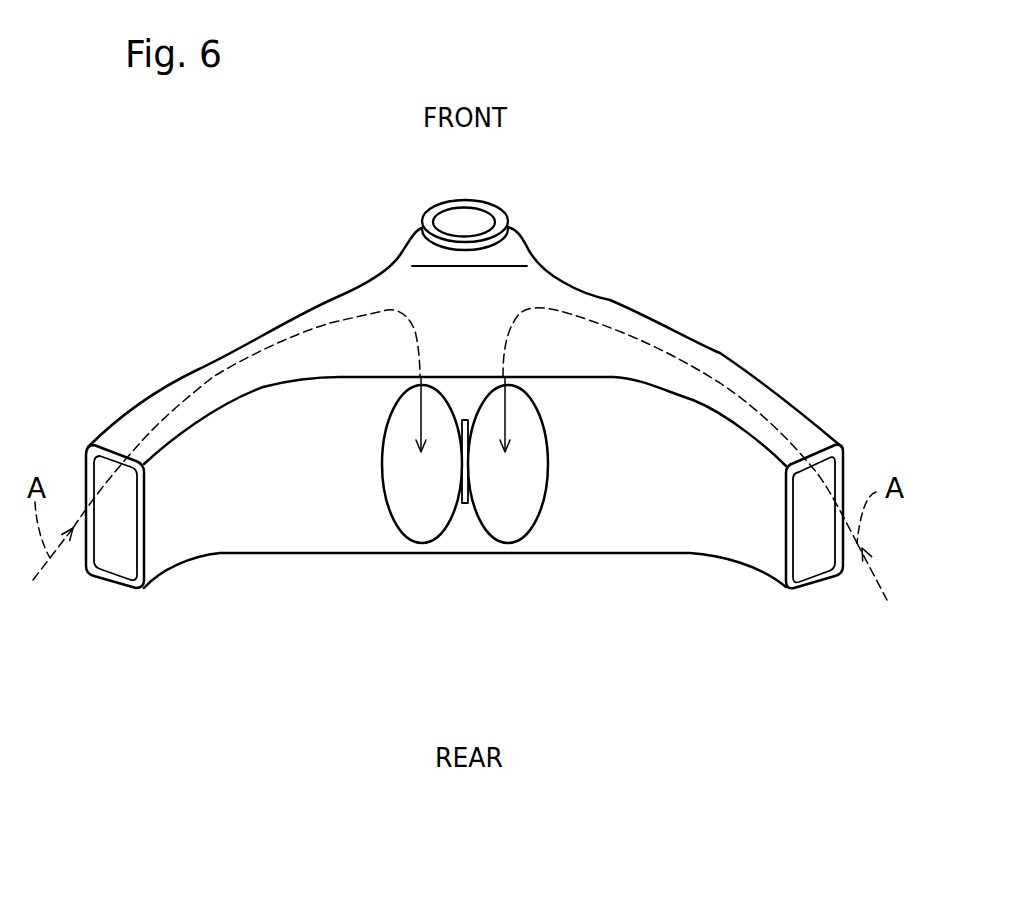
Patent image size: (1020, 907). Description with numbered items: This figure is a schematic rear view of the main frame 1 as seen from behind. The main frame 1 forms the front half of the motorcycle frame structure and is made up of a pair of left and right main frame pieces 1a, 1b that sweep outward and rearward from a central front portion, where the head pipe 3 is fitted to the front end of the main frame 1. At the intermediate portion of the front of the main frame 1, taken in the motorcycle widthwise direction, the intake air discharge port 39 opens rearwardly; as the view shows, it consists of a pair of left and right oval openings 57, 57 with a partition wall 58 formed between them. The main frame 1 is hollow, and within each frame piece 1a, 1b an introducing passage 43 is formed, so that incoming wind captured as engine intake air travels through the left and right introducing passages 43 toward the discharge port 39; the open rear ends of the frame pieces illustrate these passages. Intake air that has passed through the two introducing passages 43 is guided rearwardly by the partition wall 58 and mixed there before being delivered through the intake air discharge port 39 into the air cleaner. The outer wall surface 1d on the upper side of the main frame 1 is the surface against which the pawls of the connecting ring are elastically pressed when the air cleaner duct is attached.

The main frame 1 is at (465, 407).
The left main frame piece 1a is at (188, 385).
The right main frame piece 1b is at (693, 357).
The outer wall surface 1d is at (465, 368).
The head pipe 3 is at (467, 222).
The intake air discharge port 39 is at (537, 546).
The introducing passage 43 is at (120, 548).
The oval opening 57 is at (425, 513).
The partition wall 58 is at (465, 468).